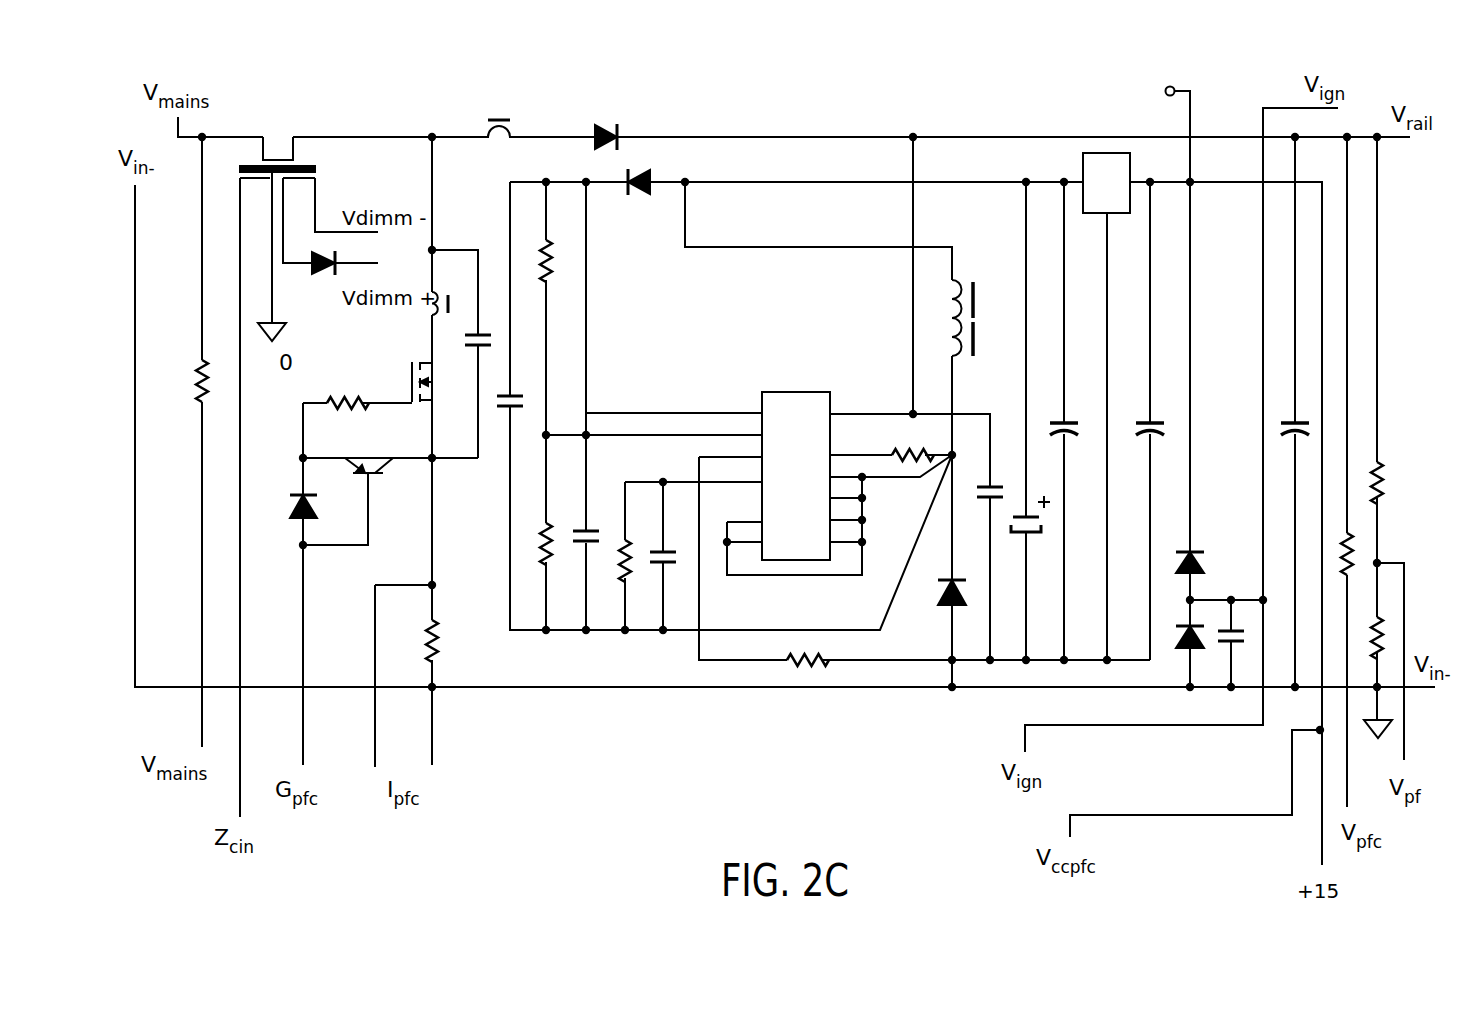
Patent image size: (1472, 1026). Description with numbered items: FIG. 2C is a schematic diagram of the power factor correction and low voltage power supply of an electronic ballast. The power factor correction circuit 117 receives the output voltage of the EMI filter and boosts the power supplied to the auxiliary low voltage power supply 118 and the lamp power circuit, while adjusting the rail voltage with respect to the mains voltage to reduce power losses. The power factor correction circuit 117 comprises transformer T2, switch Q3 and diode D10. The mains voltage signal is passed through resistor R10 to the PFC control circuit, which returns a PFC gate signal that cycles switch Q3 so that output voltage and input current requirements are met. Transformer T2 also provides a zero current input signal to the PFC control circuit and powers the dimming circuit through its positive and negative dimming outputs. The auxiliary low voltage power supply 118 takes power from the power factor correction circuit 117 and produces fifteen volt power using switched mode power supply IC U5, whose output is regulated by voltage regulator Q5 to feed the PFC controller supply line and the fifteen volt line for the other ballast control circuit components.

The power factor correction circuit 117 is at (317, 124).
The auxiliary low voltage power supply 118 is at (798, 124).
The transformer T2 is at (292, 157).
The resistor R10 is at (179, 442).
The switch Q3 is at (400, 382).
The diode D10 is at (606, 122).
The voltage regulator Q5 is at (1120, 194).
The switched mode power supply IC U5 is at (811, 484).